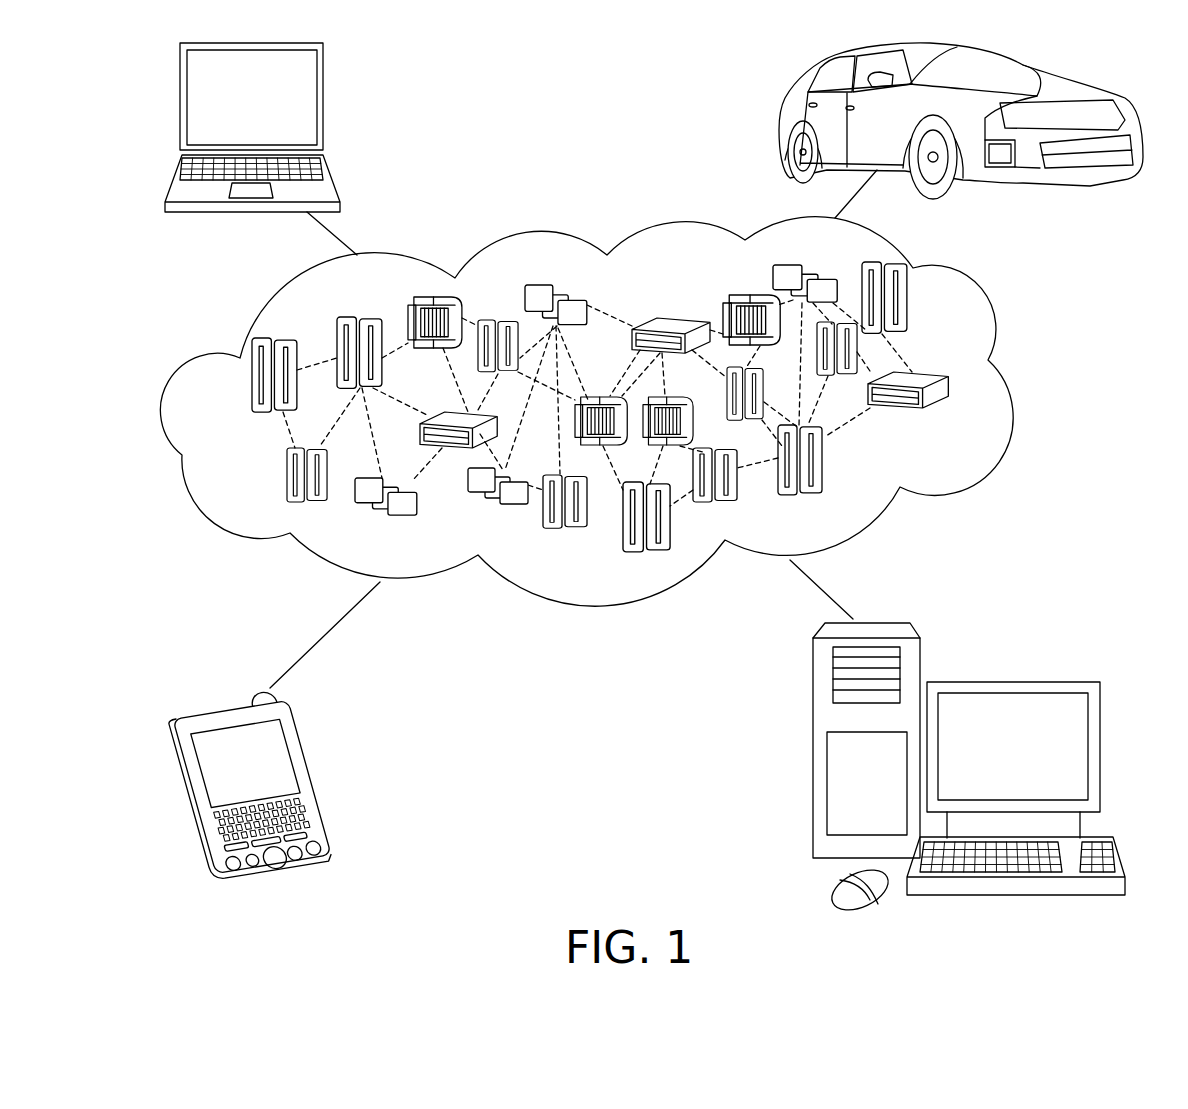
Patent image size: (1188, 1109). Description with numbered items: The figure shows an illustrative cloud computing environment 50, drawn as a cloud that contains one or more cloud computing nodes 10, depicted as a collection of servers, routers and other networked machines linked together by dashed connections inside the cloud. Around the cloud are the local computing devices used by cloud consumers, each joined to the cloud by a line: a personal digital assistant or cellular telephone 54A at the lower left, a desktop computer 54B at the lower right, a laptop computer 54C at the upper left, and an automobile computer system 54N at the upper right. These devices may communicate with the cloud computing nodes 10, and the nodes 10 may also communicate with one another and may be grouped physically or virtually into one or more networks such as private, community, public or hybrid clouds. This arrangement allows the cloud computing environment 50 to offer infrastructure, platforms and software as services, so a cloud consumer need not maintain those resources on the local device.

The cloud computing nodes 10 is at (950, 417).
The cloud computing environment 50 is at (1011, 386).
The personal digital assistant or cellular telephone 54A is at (312, 778).
The desktop computer 54B is at (1010, 682).
The laptop computer 54C is at (323, 107).
The automobile computer system 54N is at (783, 128).